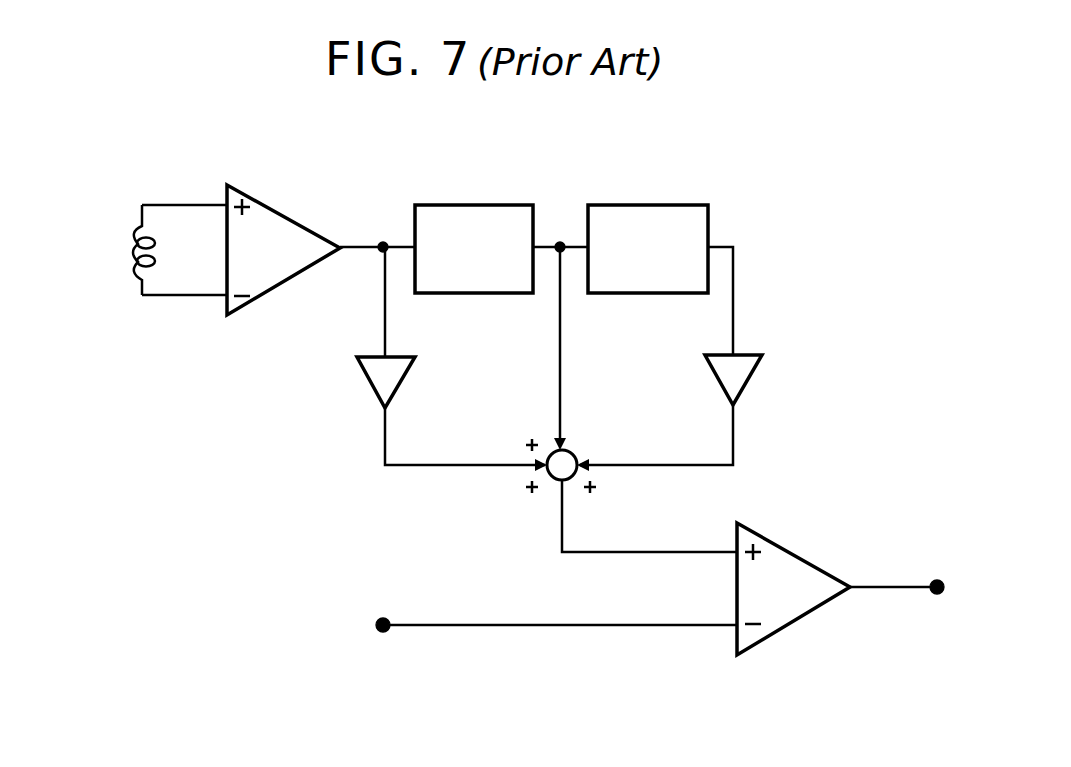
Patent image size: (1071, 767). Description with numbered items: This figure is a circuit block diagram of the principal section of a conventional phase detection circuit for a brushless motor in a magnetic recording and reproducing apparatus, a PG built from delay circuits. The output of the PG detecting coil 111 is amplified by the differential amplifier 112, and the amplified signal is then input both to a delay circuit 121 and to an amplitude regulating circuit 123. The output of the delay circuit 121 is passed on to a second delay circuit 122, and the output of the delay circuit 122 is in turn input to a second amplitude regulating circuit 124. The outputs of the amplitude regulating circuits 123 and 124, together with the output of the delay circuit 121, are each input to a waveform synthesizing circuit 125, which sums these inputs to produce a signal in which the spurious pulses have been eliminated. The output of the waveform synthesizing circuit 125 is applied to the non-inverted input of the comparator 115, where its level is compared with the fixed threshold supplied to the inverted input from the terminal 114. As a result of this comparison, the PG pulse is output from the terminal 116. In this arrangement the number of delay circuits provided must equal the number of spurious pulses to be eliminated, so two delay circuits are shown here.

The PG detecting coil 111 is at (133, 242).
The differential amplifier 112 is at (305, 228).
The terminal 114 is at (382, 634).
The comparator 115 is at (783, 632).
The terminal 116 is at (935, 596).
The delay circuit 121 is at (437, 205).
The delay circuit 122 is at (613, 205).
The amplitude regulating circuit 123 is at (368, 385).
The amplitude regulating circuit 124 is at (750, 380).
The waveform synthesizing circuit 125 is at (571, 452).